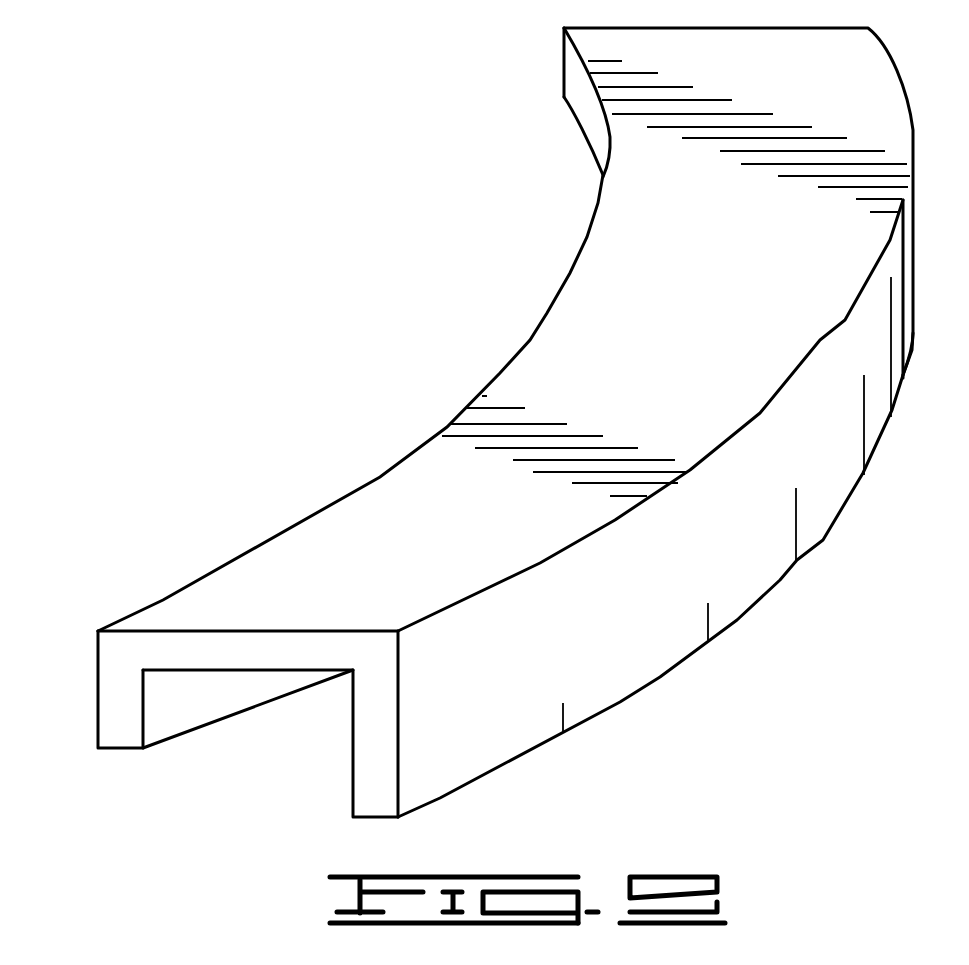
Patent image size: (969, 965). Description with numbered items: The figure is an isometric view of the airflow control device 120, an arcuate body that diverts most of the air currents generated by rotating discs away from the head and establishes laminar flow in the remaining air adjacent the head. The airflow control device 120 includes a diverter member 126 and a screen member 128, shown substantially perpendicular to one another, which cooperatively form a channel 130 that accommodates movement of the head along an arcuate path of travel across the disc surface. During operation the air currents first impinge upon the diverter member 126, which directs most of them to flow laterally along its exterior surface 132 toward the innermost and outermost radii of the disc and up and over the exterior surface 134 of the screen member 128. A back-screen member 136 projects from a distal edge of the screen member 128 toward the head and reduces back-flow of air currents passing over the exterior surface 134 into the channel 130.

The airflow control device 120 is at (472, 474).
The diverter member 126 is at (467, 687).
The screen member 128 is at (370, 590).
The channel 130 is at (295, 728).
The exterior surface of the diverter member 132 is at (640, 605).
The exterior surface of the screen member 134 is at (558, 340).
The back-screen member 136 is at (115, 718).